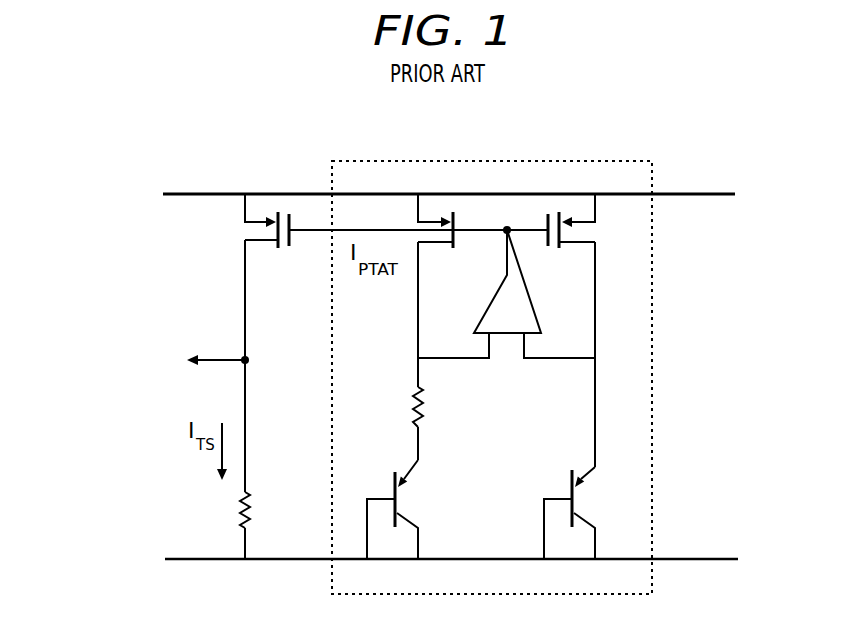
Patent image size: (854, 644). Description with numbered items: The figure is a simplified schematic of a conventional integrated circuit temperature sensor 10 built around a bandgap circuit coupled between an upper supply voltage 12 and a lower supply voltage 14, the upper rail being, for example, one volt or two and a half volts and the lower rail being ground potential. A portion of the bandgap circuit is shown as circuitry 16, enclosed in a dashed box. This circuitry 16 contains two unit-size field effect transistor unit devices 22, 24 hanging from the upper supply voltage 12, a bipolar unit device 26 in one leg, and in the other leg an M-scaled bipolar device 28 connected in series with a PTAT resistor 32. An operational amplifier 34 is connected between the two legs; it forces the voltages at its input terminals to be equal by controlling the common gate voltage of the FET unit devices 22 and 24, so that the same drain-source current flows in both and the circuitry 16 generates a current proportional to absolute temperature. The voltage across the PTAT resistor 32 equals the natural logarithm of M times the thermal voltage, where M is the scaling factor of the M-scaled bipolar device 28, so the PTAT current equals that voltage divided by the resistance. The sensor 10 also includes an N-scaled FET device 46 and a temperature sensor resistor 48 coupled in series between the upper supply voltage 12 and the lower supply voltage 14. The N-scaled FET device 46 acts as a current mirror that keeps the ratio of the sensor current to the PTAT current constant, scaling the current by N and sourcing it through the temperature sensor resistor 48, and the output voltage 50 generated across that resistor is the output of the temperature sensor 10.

The temperature sensor 10 is at (140, 137).
The upper supply voltage 12 is at (697, 193).
The lower supply voltage 14 is at (680, 561).
The circuitry 16 is at (627, 161).
The field effect transistor unit device 22 is at (430, 208).
The field effect transistor unit device 24 is at (578, 208).
The bipolar unit device 26 is at (600, 482).
The M-scaled bipolar device 28 is at (420, 518).
The resistor RPTAT 32 is at (421, 393).
The operational amplifier 34 is at (513, 302).
The N-scaled FET device 46 is at (258, 208).
The temperature sensor resistor RTS 48 is at (240, 512).
The voltage VTS 50 is at (222, 358).